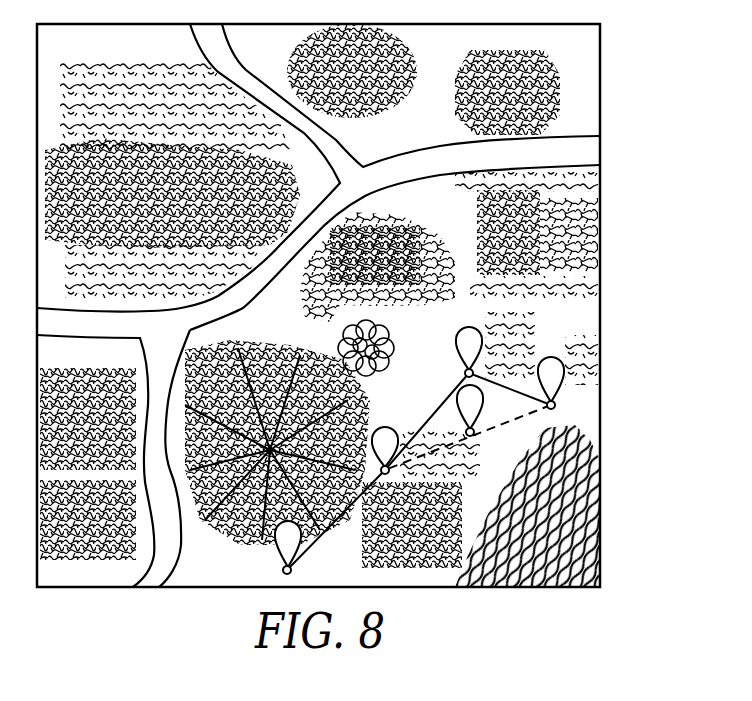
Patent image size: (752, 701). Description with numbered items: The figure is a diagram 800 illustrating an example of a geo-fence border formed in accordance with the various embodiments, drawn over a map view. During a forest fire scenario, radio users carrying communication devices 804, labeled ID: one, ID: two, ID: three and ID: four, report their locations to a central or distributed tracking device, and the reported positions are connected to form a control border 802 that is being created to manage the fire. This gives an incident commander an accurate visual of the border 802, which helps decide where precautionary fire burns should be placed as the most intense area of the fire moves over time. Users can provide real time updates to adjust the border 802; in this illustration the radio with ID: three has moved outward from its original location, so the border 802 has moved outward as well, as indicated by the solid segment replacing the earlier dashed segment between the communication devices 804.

The diagram 800 is at (600, 54).
The border 802 is at (440, 402).
The communication devices 804 is at (281, 562).